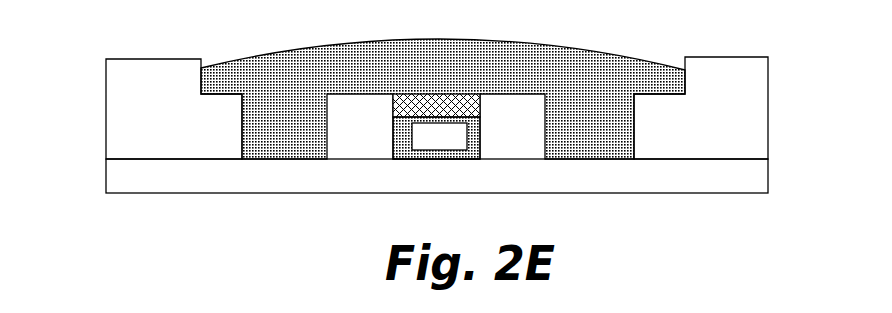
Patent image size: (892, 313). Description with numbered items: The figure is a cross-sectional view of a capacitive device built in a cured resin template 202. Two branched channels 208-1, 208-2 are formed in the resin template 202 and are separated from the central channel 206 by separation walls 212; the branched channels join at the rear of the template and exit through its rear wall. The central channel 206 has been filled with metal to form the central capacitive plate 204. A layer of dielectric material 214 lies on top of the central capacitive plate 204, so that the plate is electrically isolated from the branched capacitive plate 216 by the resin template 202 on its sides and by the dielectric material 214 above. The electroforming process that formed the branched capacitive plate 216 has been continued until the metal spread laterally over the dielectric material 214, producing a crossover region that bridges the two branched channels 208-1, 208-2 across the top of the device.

The resin template 202 is at (396, 86).
The central capacitive plate 204 is at (456, 147).
The central channel 206 is at (482, 195).
The first branched channel 208-1 is at (323, 195).
The second branched channel 208-2 is at (628, 195).
The separation walls 212 is at (198, 137).
The dielectric material 214 is at (454, 108).
The branched capacitive plate 216 is at (306, 50).